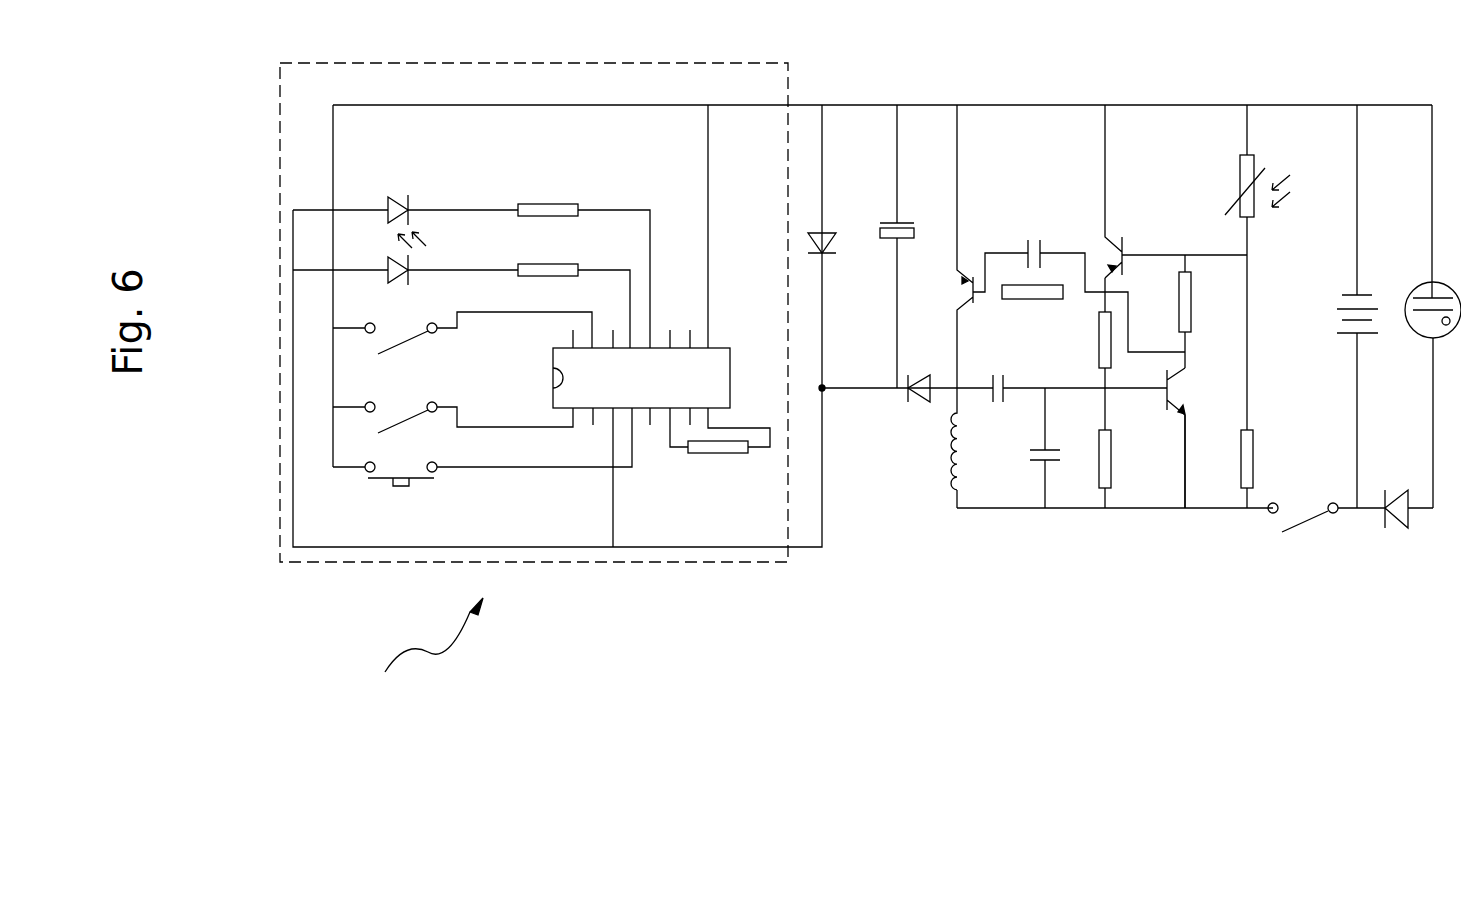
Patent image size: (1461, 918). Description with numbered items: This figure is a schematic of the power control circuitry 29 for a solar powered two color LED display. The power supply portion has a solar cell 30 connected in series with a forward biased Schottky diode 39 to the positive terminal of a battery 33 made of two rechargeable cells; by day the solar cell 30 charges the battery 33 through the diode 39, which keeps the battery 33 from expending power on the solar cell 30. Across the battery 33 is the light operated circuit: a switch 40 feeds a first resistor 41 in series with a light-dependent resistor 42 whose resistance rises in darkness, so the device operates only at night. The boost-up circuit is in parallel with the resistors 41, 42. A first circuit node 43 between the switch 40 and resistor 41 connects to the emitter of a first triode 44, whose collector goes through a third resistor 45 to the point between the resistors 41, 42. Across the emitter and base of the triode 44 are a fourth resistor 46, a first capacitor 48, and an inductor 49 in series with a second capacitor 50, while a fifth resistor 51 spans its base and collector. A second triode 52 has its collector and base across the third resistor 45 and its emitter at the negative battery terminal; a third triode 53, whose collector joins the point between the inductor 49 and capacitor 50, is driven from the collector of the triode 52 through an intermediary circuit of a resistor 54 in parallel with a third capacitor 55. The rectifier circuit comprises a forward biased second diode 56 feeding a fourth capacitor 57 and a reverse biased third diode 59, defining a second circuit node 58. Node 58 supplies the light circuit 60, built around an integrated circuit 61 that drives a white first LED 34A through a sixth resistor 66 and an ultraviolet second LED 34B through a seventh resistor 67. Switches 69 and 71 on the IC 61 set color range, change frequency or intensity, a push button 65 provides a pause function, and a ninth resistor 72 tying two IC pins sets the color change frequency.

The control circuit 29 is at (414, 645).
The solar cell 30 is at (1418, 338).
The battery 33 is at (1338, 350).
The first light emitting diode 34A is at (410, 274).
The second light emitting diode 34B is at (410, 214).
The diode 39 is at (1378, 540).
The switch 40 is at (1268, 518).
The first resistor 41 is at (1258, 455).
The light-dependent resistor 42 is at (1258, 222).
The first circuit node 43 is at (1180, 512).
The first triode 44 is at (1180, 410).
The third resistor 45 is at (1192, 302).
The fourth resistor 46 is at (1092, 492).
The first capacitor 48 is at (1037, 492).
The inductor 49 is at (945, 492).
The second capacitor 50 is at (983, 510).
The fifth resistor 51 is at (1098, 338).
The second triode 52 is at (1120, 240).
The third triode 53 is at (962, 278).
The fourth resistor 54 is at (1015, 302).
The third capacitor 55 is at (1033, 240).
The second diode 56 is at (925, 440).
The fourth capacitor 57 is at (912, 225).
The second circuit node 58 is at (905, 385).
The third diode 59 is at (812, 262).
The light circuit 60 is at (385, 566).
The integrated circuit 61 is at (725, 352).
The push button 65 is at (380, 490).
The sixth resistor 66 is at (560, 278).
The seventh resistor 67 is at (560, 218).
The switch 69 is at (440, 412).
The switch 71 is at (425, 323).
The ninth resistor 72 is at (715, 455).